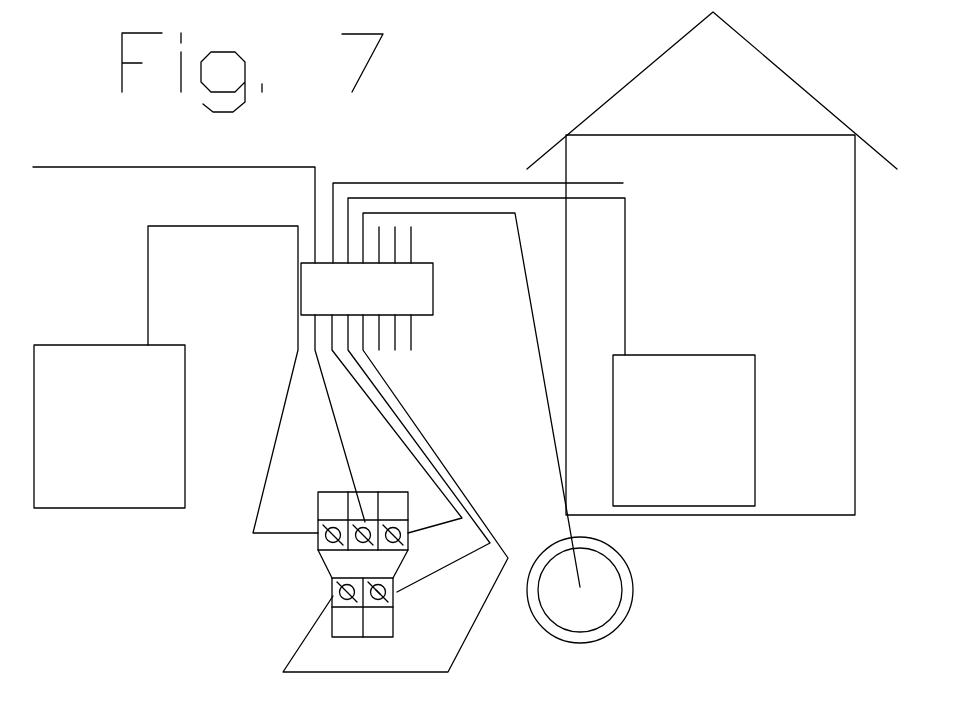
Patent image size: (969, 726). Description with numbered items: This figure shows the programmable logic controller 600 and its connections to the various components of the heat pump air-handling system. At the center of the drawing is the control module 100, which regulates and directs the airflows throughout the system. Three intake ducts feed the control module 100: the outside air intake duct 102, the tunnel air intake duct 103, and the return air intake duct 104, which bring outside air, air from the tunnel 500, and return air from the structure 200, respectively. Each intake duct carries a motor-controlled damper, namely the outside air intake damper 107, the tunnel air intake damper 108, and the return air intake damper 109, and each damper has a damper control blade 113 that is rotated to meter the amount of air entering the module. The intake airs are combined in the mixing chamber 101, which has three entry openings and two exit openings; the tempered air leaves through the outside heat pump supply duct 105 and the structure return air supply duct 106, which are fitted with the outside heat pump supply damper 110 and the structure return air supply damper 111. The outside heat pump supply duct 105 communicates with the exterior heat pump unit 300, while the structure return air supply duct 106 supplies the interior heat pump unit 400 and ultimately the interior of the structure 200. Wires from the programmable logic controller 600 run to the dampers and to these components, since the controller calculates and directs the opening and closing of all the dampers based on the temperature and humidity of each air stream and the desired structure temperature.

The control module 100 is at (328, 449).
The mixing chamber 101 is at (351, 572).
The outside air intake duct 102 is at (325, 512).
The tunnel air intake duct 103 is at (355, 512).
The return air intake duct 104 is at (385, 512).
The outside heat pump supply duct 105 is at (339, 629).
The structure return air supply duct 106 is at (370, 629).
The outside air intake damper 107 is at (317, 533).
The tunnel air intake damper 108 is at (350, 550).
The return air intake damper 109 is at (397, 424).
The outside heat pump supply damper 110 is at (333, 595).
The structure return air supply damper 111 is at (397, 592).
The damper control blade 113 is at (409, 624).
The structure 200 is at (735, 183).
The exterior heat pump unit 300 is at (109, 426).
The interior heat pump unit 400 is at (718, 467).
The tunnel 500 is at (737, 638).
The programmable logic controller 600 is at (405, 309).